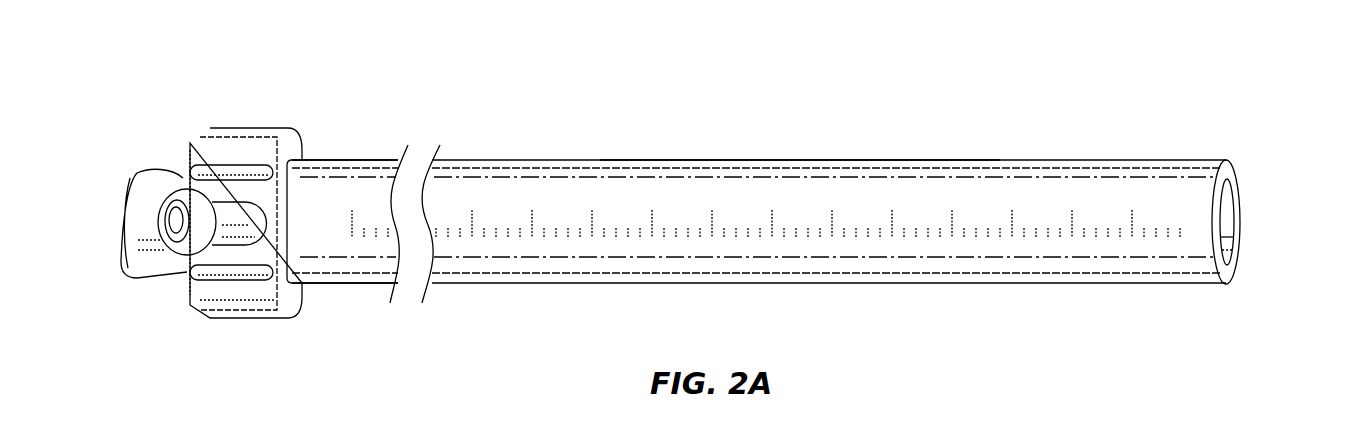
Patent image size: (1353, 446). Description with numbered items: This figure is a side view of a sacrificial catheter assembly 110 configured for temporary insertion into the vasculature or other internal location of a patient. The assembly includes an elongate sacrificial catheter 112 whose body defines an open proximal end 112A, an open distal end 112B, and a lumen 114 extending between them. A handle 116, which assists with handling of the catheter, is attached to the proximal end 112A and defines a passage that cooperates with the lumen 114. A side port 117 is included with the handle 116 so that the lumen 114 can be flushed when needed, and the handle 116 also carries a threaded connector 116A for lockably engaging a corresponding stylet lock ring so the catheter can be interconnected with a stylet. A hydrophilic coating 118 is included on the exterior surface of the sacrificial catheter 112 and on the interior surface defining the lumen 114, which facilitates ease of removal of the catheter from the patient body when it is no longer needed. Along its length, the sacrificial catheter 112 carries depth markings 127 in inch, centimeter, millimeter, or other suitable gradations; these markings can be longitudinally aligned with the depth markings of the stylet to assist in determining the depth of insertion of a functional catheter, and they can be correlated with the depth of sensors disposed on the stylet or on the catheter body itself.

The sacrificial catheter assembly 110 is at (724, 194).
The sacrificial catheter 112 is at (812, 213).
The open proximal end 112A is at (316, 158).
The open distal end 112B is at (1225, 175).
The lumen 114 is at (1226, 210).
The handle 116 is at (206, 194).
The threaded connector 116A is at (160, 258).
The side port 117 is at (198, 208).
The hydrophilic coating 118 is at (767, 173).
The depth markings 127 is at (893, 213).